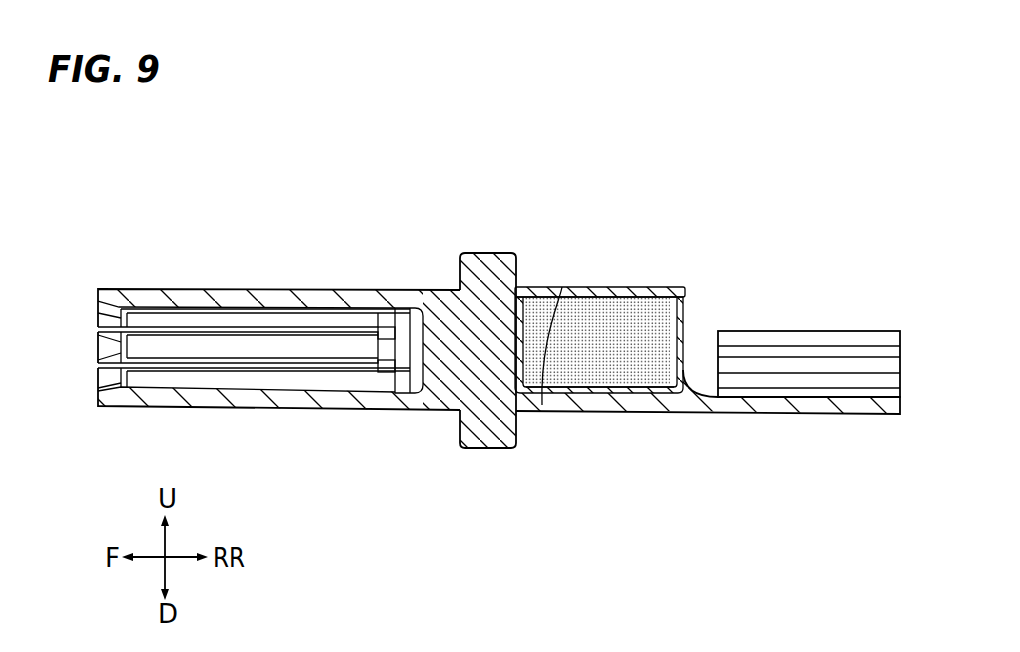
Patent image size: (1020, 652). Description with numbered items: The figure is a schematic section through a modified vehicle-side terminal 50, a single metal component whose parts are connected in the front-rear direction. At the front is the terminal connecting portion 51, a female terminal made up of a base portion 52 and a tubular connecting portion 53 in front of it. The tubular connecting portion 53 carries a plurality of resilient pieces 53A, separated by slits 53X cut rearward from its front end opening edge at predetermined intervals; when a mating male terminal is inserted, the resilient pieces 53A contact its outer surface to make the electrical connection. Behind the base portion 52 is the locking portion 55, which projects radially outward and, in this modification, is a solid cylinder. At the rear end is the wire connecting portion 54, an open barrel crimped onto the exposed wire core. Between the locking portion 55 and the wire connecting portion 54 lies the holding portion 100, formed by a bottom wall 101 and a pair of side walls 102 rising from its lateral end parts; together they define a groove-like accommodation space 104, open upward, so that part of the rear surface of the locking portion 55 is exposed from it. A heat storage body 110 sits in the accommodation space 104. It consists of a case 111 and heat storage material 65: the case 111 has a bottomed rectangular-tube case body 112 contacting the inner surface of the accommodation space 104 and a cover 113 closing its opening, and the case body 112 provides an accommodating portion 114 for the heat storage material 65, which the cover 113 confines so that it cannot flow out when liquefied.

The vehicle-side terminal 50 is at (147, 210).
The terminal connecting portion 51 is at (430, 242).
The base portion 52 is at (438, 325).
The tubular connecting portion 53 is at (350, 288).
The resilient pieces 53A is at (235, 350).
The slits 53X is at (178, 346).
The wire connecting portion 54 is at (873, 338).
The locking portion 55 is at (488, 257).
The heat storage material 65 is at (705, 368).
The holding portion 100 is at (652, 235).
The bottom wall 101 is at (562, 287).
The side walls 102 is at (648, 290).
The accommodation space 104 is at (585, 388).
The heat storage body 110 is at (555, 398).
The case 111 is at (750, 230).
The case body 112 is at (683, 318).
The cover 113 is at (684, 289).
The accommodating portion 114 is at (620, 382).